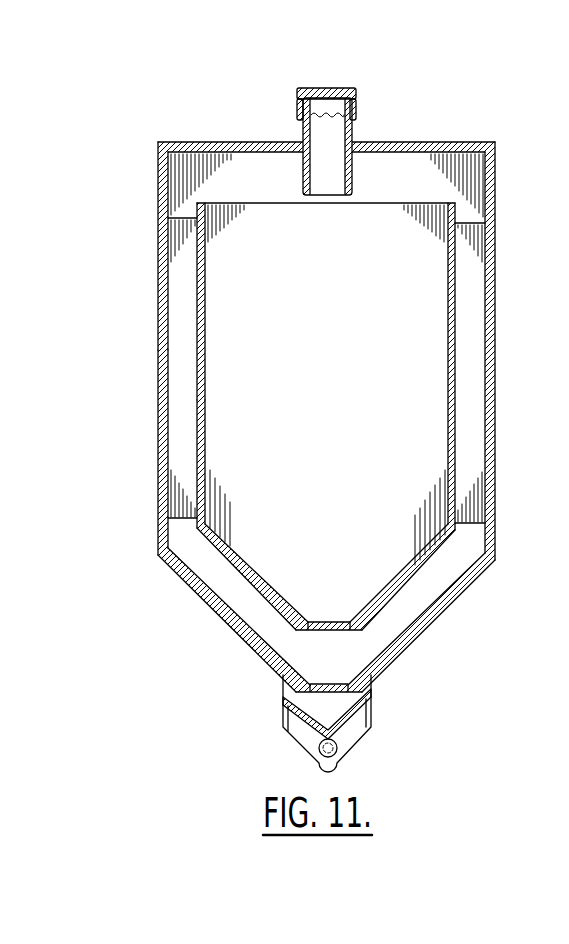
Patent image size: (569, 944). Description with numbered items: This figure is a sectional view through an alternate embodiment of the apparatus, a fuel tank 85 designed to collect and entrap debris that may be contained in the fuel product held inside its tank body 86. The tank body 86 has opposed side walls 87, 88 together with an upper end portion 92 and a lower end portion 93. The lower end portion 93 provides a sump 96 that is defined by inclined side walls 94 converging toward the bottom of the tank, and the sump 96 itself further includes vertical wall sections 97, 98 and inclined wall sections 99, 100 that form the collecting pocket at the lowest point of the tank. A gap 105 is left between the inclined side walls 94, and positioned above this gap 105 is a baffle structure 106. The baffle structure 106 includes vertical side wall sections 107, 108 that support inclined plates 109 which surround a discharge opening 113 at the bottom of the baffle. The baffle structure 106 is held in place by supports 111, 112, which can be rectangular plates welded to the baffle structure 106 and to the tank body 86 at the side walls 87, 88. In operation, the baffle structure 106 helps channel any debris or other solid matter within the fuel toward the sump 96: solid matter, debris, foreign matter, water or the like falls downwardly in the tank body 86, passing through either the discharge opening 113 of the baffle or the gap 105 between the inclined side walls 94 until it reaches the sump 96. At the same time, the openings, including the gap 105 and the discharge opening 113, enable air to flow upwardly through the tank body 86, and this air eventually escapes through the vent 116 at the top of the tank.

The fuel tank 85 is at (492, 130).
The tank body 86 is at (158, 243).
The side wall 87 is at (158, 485).
The side wall 88 is at (497, 452).
The upper end portion 92 is at (124, 147).
The lower end portion 93 is at (198, 714).
The inclined side walls 94 is at (240, 630).
The sump 96 is at (284, 728).
The vertical wall section 97 is at (283, 696).
The vertical wall section 98 is at (371, 698).
The inclined wall section 99 is at (306, 748).
The inclined wall section 100 is at (358, 744).
The gap 105 is at (332, 678).
The baffle structure 106 is at (205, 500).
The vertical side wall section 107 is at (205, 386).
The vertical side wall section 108 is at (448, 314).
The inclined plate 109 is at (422, 552).
The support 111 is at (182, 367).
The support 112 is at (471, 366).
The discharge opening 113 is at (322, 613).
The vent 116 is at (355, 129).